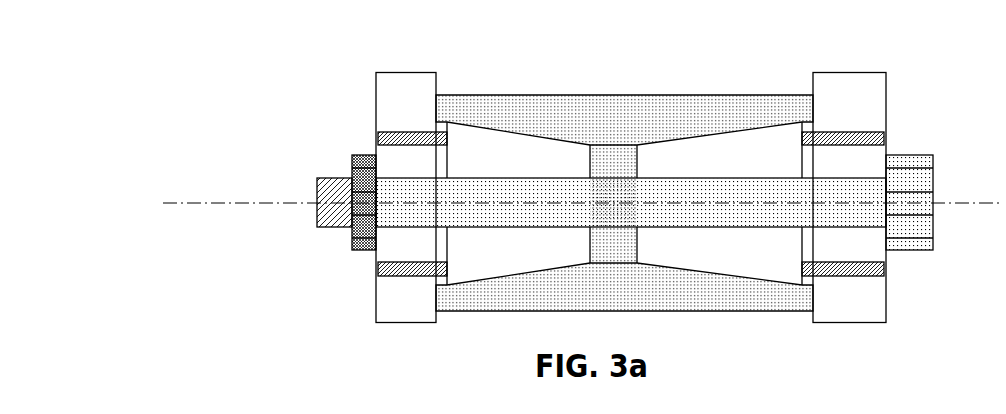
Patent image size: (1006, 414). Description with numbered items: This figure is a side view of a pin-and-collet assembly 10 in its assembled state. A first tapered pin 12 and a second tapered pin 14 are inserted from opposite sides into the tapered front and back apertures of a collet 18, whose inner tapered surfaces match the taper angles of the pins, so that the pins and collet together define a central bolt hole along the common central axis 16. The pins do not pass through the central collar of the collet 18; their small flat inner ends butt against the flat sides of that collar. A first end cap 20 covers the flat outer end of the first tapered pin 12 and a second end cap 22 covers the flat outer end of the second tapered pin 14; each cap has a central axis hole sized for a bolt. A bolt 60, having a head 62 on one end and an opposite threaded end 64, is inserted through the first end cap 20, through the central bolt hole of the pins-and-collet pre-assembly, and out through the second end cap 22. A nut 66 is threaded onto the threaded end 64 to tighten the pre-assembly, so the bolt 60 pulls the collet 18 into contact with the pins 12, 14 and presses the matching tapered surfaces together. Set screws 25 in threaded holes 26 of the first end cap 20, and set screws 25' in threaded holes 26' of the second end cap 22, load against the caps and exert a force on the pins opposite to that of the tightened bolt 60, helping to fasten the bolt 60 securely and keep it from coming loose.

The pin-and-collet assembly 10 is at (212, 297).
The first tapered pin 12 is at (732, 155).
The second tapered pin 14 is at (495, 155).
The central axis 16 is at (235, 200).
The collet 18 is at (673, 108).
The first end cap 20 is at (850, 97).
The second end cap 22 is at (412, 98).
The set screws 25 is at (871, 110).
The set screws 25' is at (384, 108).
The threaded holes 26 is at (888, 193).
The threaded holes 26' is at (359, 186).
The bolt 60 is at (572, 208).
The head 62 is at (897, 228).
The threaded end 64 is at (330, 215).
The nut 66 is at (358, 262).